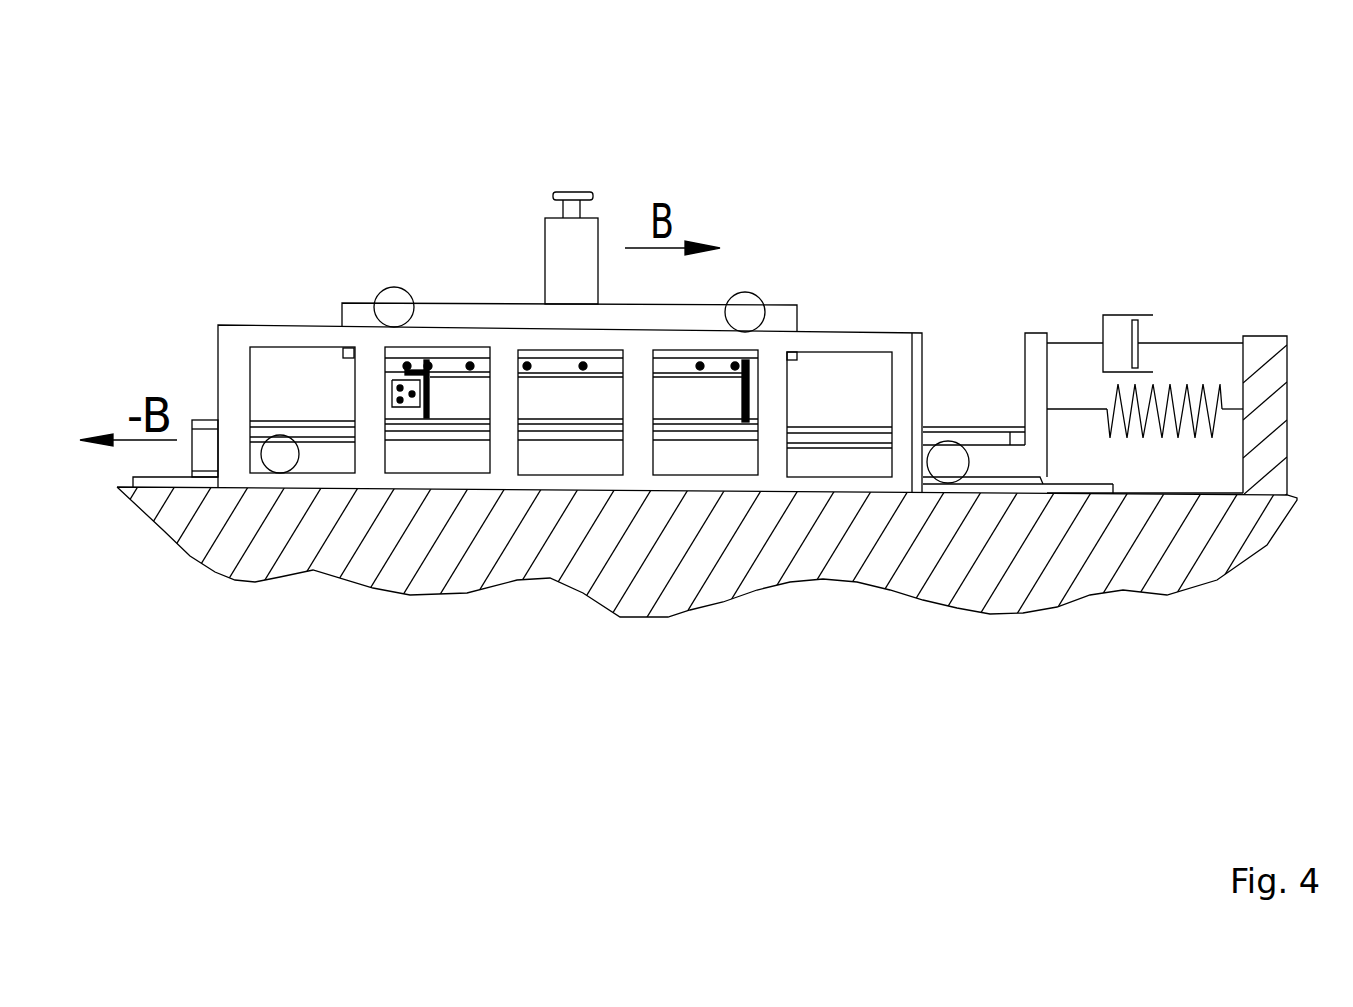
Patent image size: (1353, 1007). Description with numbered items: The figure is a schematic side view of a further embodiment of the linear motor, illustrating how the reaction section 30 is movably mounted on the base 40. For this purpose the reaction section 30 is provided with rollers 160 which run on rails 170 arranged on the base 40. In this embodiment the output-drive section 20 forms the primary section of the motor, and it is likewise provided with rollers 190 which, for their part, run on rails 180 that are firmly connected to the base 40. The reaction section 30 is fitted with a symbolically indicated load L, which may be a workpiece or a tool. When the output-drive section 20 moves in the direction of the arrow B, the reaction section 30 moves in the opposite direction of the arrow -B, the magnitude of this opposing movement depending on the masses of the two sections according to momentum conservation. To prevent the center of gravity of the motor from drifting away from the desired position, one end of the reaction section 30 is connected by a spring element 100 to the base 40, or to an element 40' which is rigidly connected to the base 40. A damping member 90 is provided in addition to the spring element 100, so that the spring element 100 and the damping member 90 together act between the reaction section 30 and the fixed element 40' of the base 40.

The output-drive section 20 is at (358, 307).
The reaction section 30 is at (198, 455).
The base 40 is at (684, 622).
The element rigidly connected to the base 40' is at (1297, 434).
The damping member 90 is at (1115, 333).
The spring element 100 is at (1207, 388).
The rollers 160 is at (948, 463).
The rails 170 is at (1040, 480).
The rails 180 is at (843, 340).
The rollers 190 is at (745, 312).
The load L is at (577, 237).